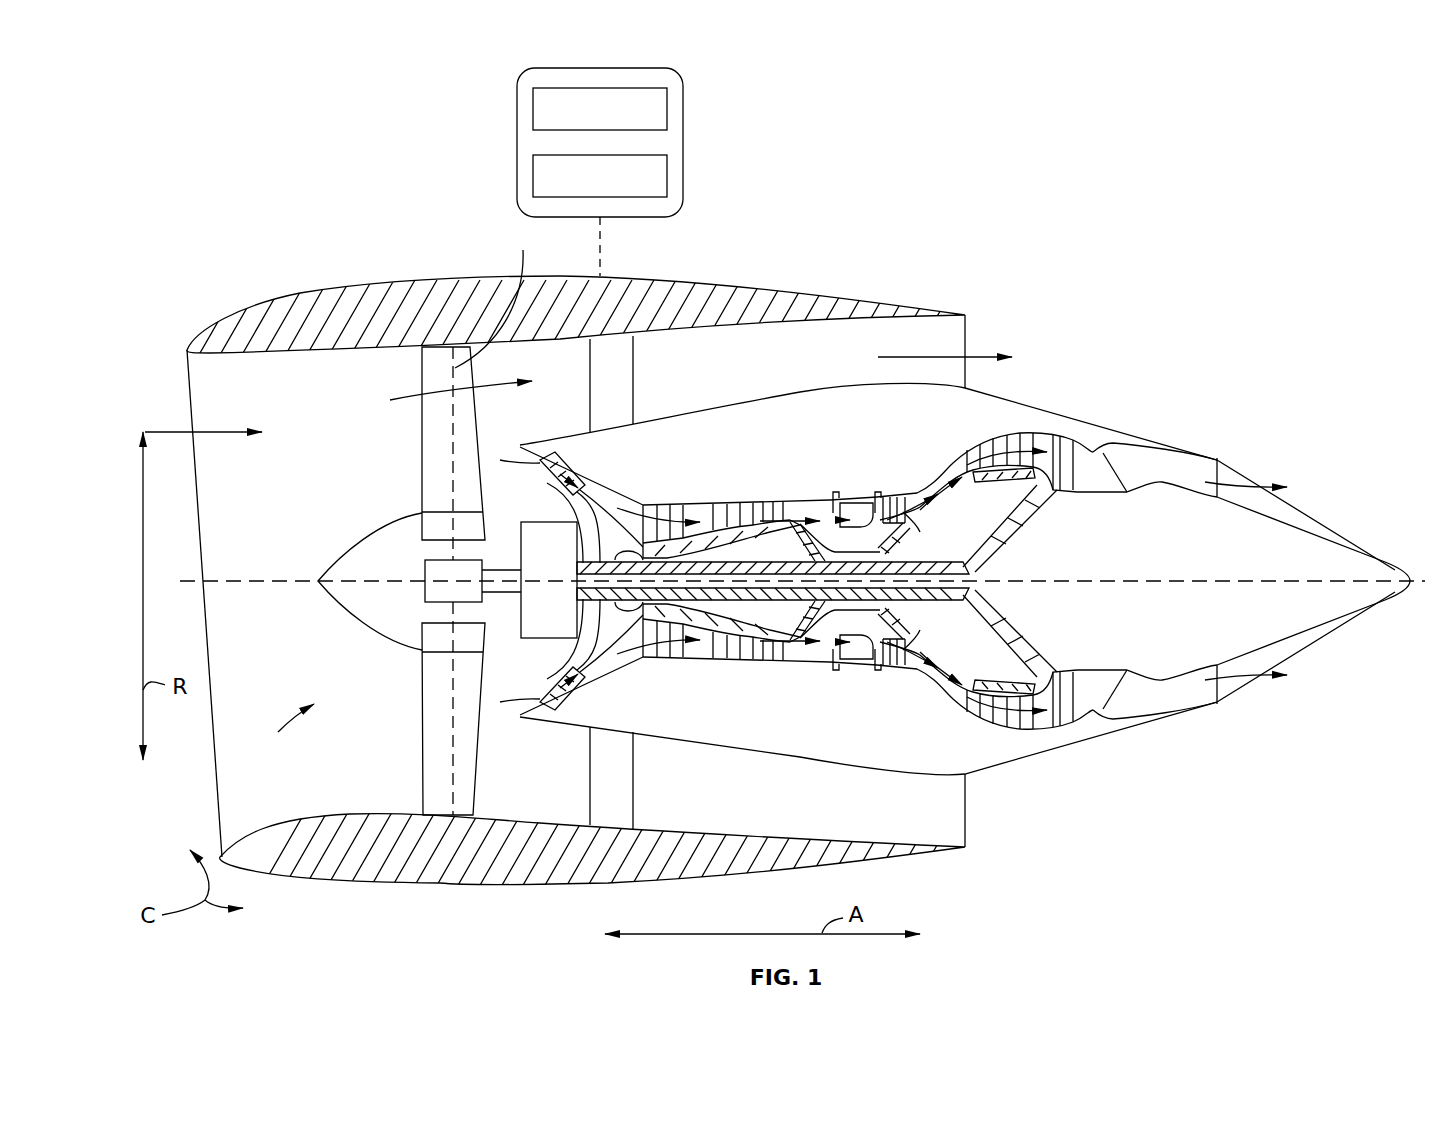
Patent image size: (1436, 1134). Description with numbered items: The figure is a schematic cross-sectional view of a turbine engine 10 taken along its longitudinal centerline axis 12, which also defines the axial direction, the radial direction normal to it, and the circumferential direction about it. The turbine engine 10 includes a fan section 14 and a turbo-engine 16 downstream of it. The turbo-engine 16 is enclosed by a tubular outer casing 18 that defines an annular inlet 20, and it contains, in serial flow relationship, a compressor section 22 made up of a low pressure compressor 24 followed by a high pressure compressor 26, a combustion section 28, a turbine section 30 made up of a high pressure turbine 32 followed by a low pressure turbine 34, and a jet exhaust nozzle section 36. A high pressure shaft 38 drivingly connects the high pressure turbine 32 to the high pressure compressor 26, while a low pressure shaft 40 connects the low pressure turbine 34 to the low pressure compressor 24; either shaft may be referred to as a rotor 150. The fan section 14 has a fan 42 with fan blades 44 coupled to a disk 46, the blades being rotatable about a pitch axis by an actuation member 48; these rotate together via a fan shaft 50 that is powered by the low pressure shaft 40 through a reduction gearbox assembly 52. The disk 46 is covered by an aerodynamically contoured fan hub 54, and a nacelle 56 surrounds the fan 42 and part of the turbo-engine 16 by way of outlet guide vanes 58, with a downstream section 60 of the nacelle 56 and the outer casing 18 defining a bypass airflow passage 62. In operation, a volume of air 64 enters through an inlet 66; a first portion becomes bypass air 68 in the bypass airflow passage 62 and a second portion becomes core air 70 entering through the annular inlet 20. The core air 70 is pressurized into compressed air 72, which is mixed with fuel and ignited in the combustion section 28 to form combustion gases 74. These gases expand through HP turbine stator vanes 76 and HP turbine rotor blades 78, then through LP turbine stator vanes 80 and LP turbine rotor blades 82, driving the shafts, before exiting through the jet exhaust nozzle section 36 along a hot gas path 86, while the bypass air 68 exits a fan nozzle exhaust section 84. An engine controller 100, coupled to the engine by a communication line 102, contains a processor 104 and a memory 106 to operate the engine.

The turbine engine 10 is at (272, 233).
The longitudinal centerline axis 12 is at (1212, 580).
The fan section 14 is at (395, 364).
The turbo-engine 16 is at (838, 752).
The outer casing 18 is at (805, 762).
The annular inlet 20 is at (512, 705).
The compressor section 22 is at (710, 470).
The low pressure compressor 24 is at (575, 645).
The high pressure compressor 26 is at (663, 642).
The combustion section 28 is at (840, 645).
The turbine section 30 is at (946, 438).
The high pressure turbine 32 is at (973, 688).
The low pressure turbine 34 is at (1010, 734).
The jet exhaust nozzle section 36 is at (1127, 698).
The high pressure shaft 38 is at (836, 528).
The low pressure shaft 40 is at (1008, 538).
The fan 42 is at (275, 721).
The fan blades 44 is at (420, 728).
The disk 46 is at (432, 522).
The actuation member 48 is at (425, 590).
The fan shaft 50 is at (521, 560).
The gearbox assembly 52 is at (540, 510).
The fan hub 54 is at (350, 605).
The nacelle 56 is at (440, 884).
The outlet guide vanes 58 is at (635, 395).
The downstream section of the nacelle 60 is at (832, 295).
The bypass airflow passage 62 is at (775, 378).
The volume of air 64 is at (232, 438).
The inlet 66 is at (215, 815).
The bypass air 68 is at (398, 402).
The core air 70 is at (528, 455).
The compressed air 72 is at (695, 535).
The combustion gases 74 is at (1005, 448).
The HP turbine stator vanes 76 is at (897, 650).
The HP turbine rotor blades 78 is at (896, 655).
The LP turbine stator vanes 80 is at (965, 697).
The LP turbine rotor blades 82 is at (983, 702).
The fan nozzle exhaust section 84 is at (958, 345).
The hot gas path 86 is at (955, 480).
The engine controller 100 is at (516, 145).
The communication line 102 is at (605, 238).
The processor 104 is at (670, 178).
The memory 106 is at (670, 112).
The rotor 150 is at (663, 540).